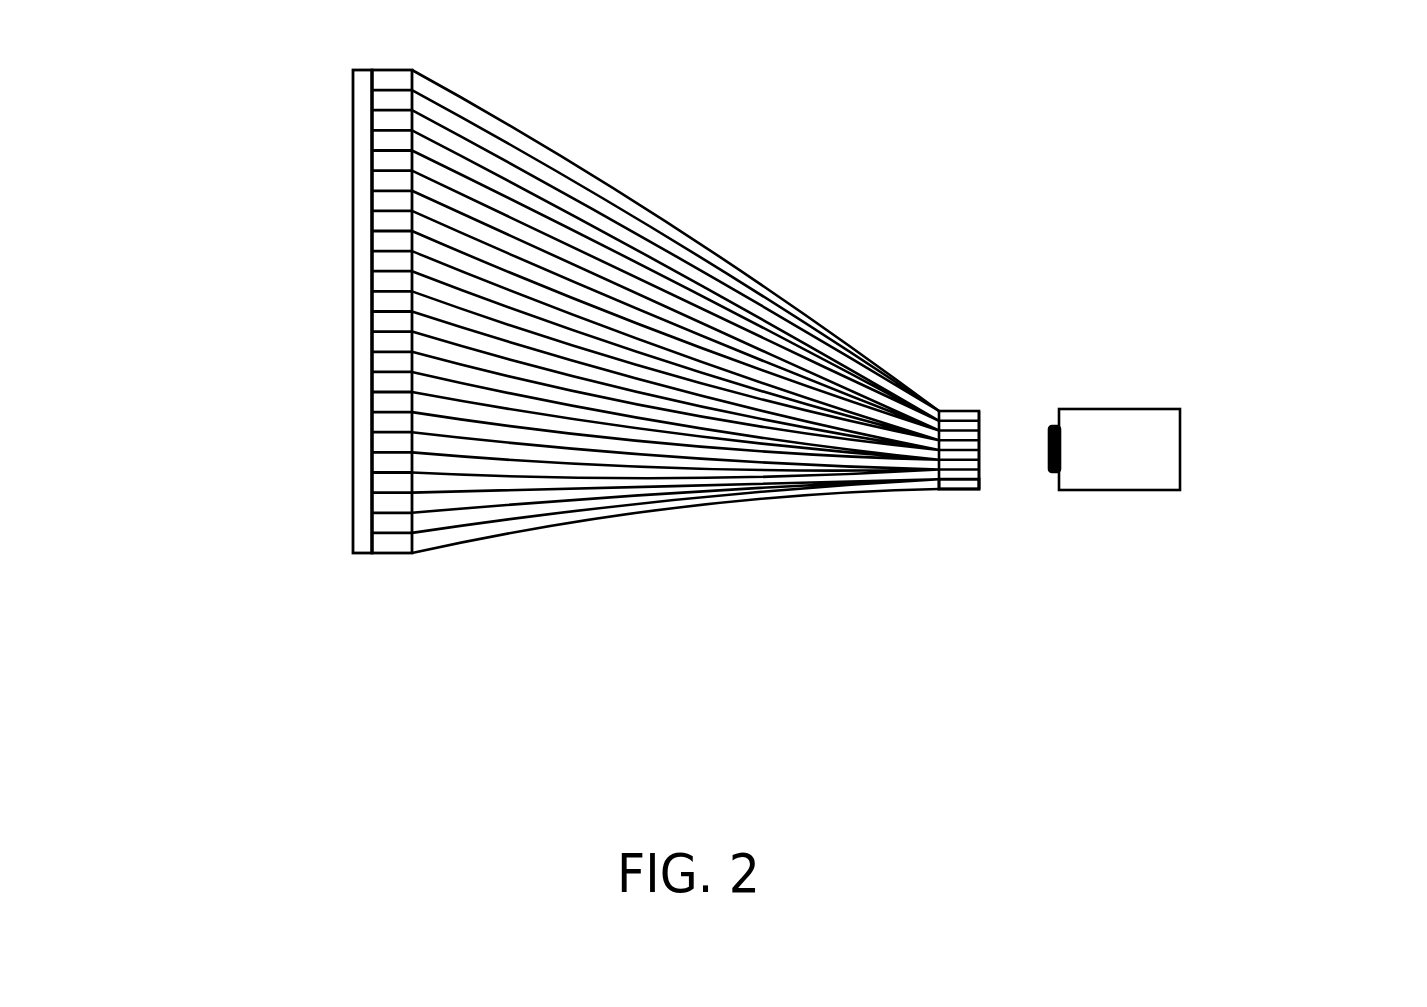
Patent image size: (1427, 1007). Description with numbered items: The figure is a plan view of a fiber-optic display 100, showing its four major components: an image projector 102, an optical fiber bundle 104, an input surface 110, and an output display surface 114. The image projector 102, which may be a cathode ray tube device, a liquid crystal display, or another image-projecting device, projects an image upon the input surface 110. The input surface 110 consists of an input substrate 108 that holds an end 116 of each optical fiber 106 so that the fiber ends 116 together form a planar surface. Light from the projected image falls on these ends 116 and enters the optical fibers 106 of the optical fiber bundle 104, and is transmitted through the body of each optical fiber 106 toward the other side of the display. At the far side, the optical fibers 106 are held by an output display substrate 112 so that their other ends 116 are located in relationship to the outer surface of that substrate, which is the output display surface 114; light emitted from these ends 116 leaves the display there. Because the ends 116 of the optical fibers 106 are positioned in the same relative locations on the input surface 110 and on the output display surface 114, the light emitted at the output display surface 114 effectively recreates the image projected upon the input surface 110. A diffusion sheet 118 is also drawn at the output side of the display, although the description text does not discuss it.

The fiber-optic display 100 is at (637, 396).
The image projector 102 is at (1110, 442).
The optical fiber bundle 104 is at (675, 370).
The optical fiber 106 is at (807, 312).
The input substrate 108 is at (1078, 345).
The input surface 110 is at (979, 454).
The output display substrate 112 is at (594, 396).
The output display surface 114 is at (373, 145).
The optical fiber end 116 is at (372, 90).
The diffusion sheet 118 is at (353, 413).